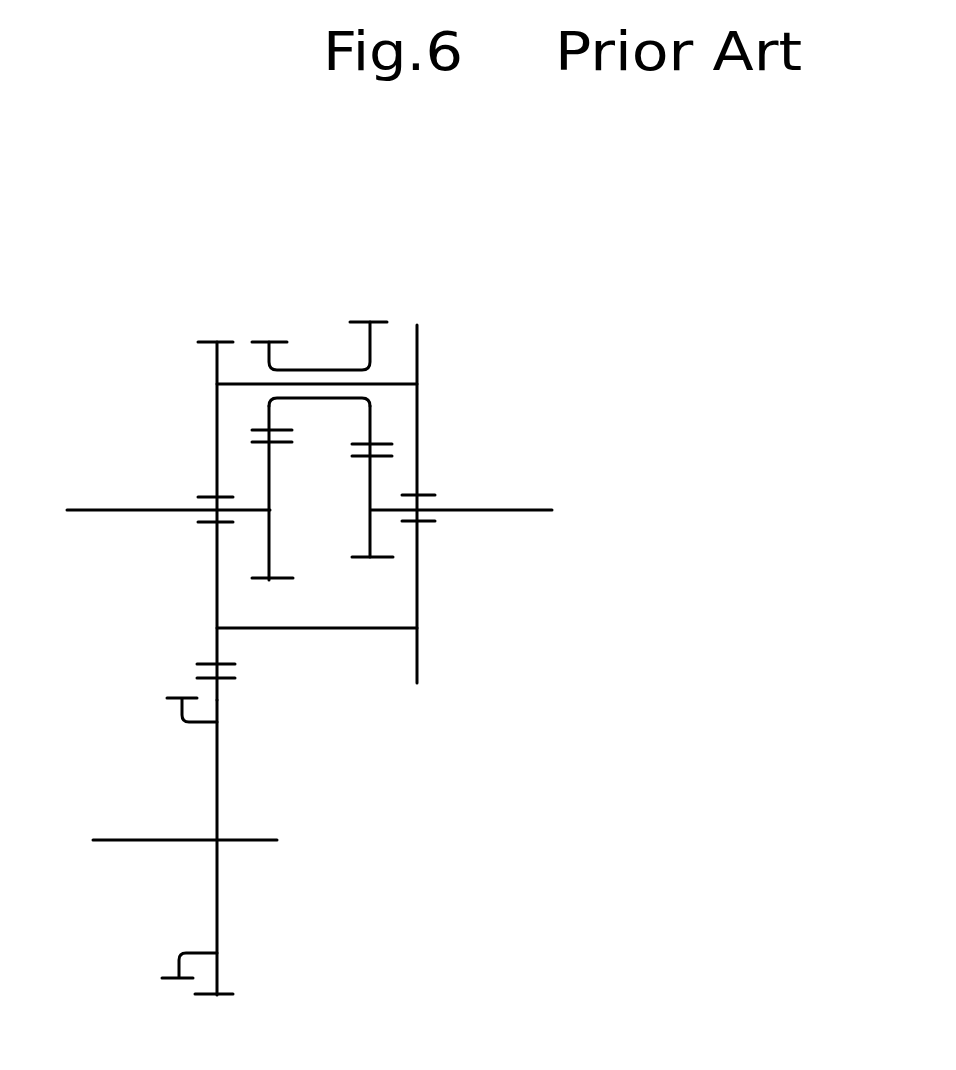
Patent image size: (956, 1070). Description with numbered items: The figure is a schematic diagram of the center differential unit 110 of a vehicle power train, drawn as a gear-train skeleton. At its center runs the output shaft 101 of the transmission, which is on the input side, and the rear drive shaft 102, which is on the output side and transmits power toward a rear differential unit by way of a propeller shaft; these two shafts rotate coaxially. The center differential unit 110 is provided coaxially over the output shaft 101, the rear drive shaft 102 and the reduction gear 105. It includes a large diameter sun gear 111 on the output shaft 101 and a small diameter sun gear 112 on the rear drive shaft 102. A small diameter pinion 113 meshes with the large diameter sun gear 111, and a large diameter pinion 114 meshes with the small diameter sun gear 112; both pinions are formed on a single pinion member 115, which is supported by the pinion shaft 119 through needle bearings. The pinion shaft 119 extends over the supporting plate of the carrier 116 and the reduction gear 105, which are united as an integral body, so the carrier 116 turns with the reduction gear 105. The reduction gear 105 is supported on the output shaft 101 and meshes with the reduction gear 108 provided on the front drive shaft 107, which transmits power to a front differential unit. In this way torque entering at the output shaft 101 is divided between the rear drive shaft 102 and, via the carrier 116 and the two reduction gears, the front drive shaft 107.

The output shaft 101 is at (90, 510).
The rear drive shaft 102 is at (525, 510).
The reduction gear 105 is at (217, 357).
The front drive shaft 107 is at (122, 840).
The reduction gear 108 is at (217, 972).
The center differential unit 110 is at (470, 271).
The large diameter sun gear 111 is at (268, 582).
The small diameter sun gear 112 is at (363, 560).
The small diameter pinion 113 is at (267, 340).
The large diameter pinion 114 is at (373, 320).
The pinion member 115 is at (318, 370).
The carrier 116 is at (338, 628).
The pinion shaft 119 is at (398, 383).